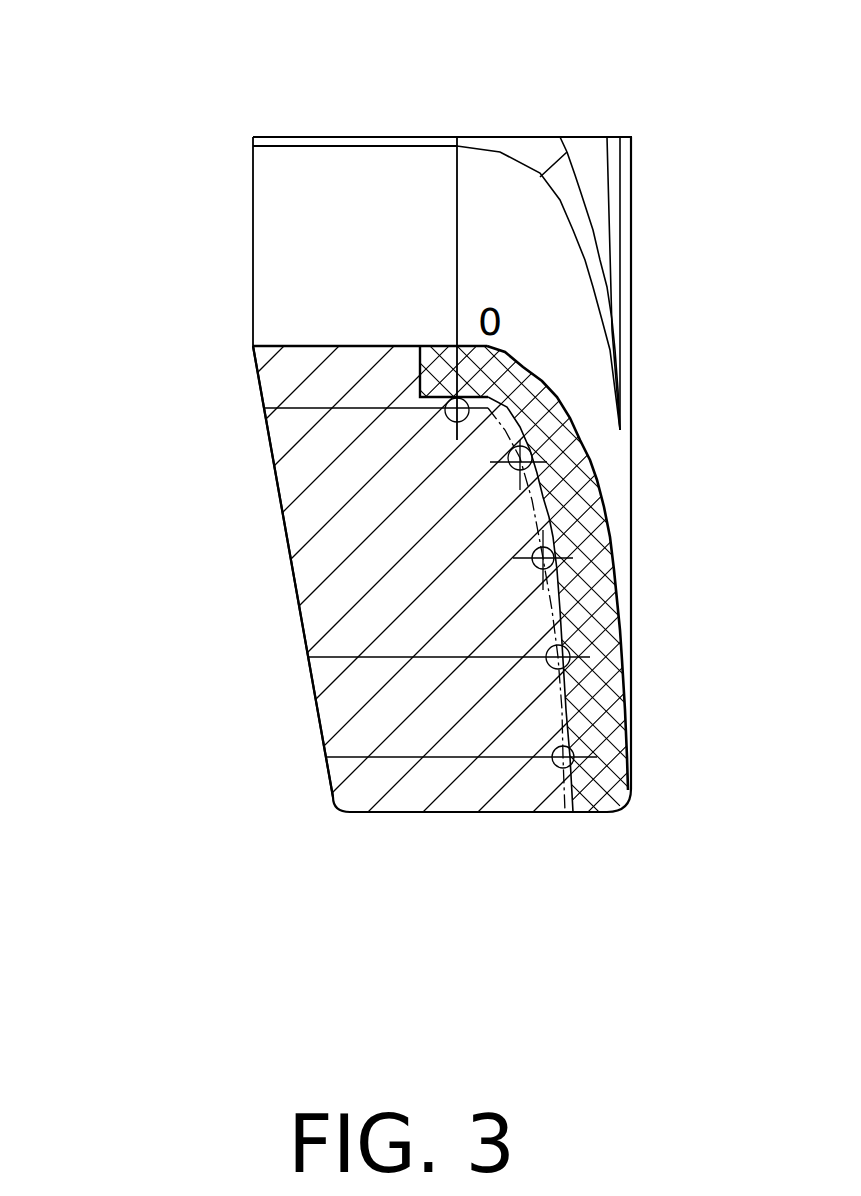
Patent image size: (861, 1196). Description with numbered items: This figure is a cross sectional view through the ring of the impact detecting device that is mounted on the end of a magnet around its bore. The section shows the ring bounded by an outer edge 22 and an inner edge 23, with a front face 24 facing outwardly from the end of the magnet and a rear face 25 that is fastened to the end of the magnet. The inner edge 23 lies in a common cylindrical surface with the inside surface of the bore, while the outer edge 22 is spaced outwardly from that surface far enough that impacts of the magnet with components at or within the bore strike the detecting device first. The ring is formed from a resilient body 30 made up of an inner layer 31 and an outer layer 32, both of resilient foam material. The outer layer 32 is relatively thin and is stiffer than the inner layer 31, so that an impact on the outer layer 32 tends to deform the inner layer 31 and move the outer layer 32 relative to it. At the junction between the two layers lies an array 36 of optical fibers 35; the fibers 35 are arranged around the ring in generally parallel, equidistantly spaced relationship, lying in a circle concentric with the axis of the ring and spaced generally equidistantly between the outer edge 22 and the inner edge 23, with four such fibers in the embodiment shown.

The outer edge 22 is at (357, 137).
The inner edge 23 is at (480, 813).
The front face 24 is at (618, 577).
The rear face 25 is at (292, 573).
The resilient body 30 is at (457, 783).
The inner layer 31 is at (393, 700).
The outer layer 32 is at (613, 703).
The optical fibers 35 is at (528, 457).
The array of optical fibers 36 is at (557, 558).